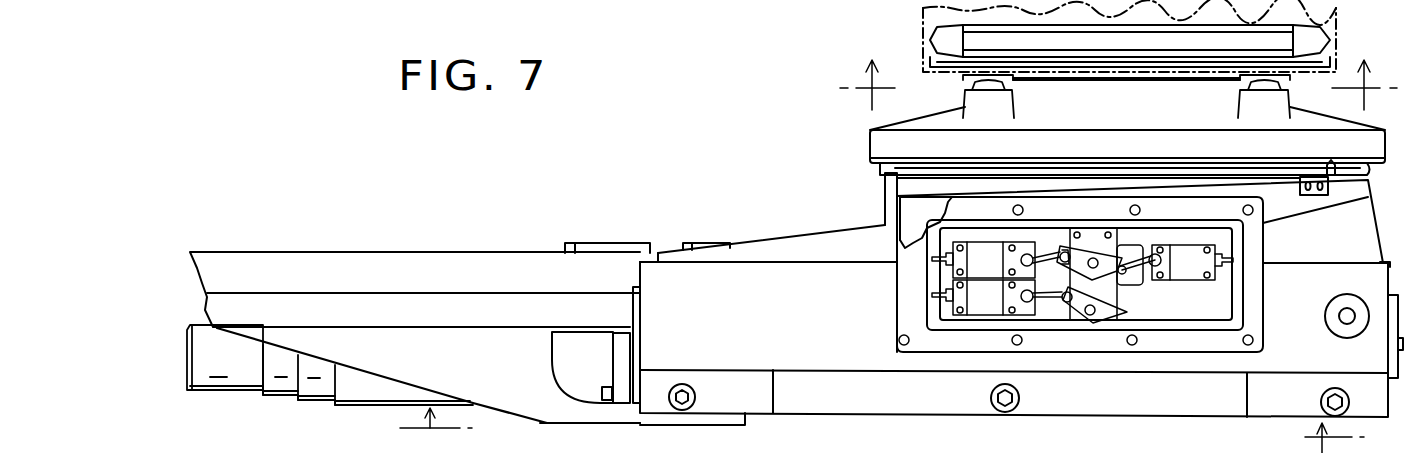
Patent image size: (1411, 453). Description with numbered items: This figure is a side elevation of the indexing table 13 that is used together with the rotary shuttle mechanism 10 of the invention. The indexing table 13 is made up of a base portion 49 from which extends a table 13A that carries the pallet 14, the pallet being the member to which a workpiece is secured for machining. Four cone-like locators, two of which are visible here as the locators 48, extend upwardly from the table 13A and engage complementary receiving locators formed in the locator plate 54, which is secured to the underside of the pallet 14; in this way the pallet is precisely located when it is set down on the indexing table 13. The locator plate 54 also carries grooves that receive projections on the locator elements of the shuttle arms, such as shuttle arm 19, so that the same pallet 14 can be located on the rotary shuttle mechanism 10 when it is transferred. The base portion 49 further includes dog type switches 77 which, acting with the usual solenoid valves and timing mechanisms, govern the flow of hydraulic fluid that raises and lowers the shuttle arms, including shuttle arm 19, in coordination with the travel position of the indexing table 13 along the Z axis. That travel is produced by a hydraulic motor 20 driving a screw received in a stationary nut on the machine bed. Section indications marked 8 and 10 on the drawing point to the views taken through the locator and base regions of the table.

The section line 8- 8 is at (1118, 89).
The rotary shuttle mechanism 10 is at (881, 430).
The indexing table 13 is at (782, 247).
The table 13A is at (883, 140).
The pallet 14 is at (938, 35).
The shuttle arm 19 is at (387, 263).
The hydraulic motor 20 is at (242, 380).
The cone-like locators 48 is at (992, 86).
The base portion 49 is at (850, 230).
The locator plate 54 is at (962, 80).
The dog type switches 77 is at (1102, 310).